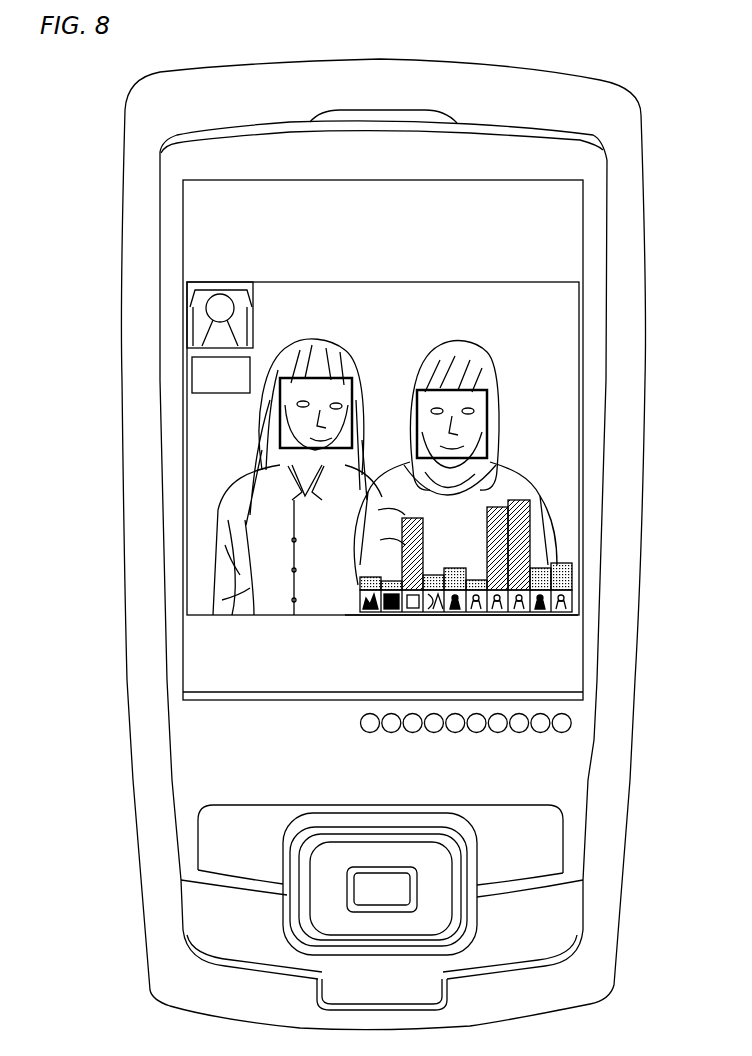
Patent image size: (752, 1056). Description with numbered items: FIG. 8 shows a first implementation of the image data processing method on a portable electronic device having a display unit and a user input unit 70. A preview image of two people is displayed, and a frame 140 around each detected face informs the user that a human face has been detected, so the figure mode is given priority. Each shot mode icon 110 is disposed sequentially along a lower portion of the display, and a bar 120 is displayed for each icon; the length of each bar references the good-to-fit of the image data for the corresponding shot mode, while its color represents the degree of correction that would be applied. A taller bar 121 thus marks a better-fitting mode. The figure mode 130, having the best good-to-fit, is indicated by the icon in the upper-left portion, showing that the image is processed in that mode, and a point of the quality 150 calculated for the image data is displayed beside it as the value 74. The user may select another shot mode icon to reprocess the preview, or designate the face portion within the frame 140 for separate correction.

The user input unit 70 is at (563, 727).
The detected face count 74 is at (192, 384).
The shot mode icon 110 is at (529, 589).
The bar 120 is at (572, 572).
The highlighted histogram bar 121 is at (531, 535).
The figure mode 130 is at (188, 325).
The frame 140 is at (430, 350).
The point of the quality 150 is at (152, 388).